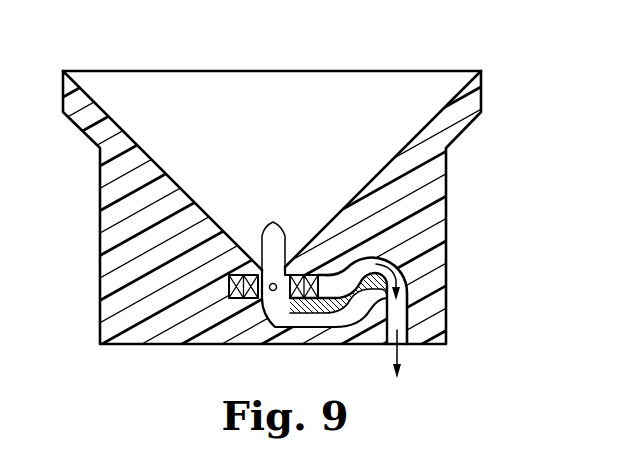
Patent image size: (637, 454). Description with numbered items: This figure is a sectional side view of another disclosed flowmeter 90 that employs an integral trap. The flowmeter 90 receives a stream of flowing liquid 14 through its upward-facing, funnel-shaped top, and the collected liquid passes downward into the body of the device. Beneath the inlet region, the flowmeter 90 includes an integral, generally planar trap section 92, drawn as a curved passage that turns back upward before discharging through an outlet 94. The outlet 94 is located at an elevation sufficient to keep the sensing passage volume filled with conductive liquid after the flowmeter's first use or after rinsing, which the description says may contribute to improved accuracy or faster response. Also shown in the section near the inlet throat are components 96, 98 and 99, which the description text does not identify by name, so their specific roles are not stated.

The flowmeter 90 is at (445, 51).
The stream of flowing liquid 14 is at (273, 254).
The trap section 92 is at (304, 314).
The outlet 94 is at (369, 284).
The seal 96 is at (287, 272).
The check ball 98 is at (272, 292).
The seal 99 is at (239, 275).